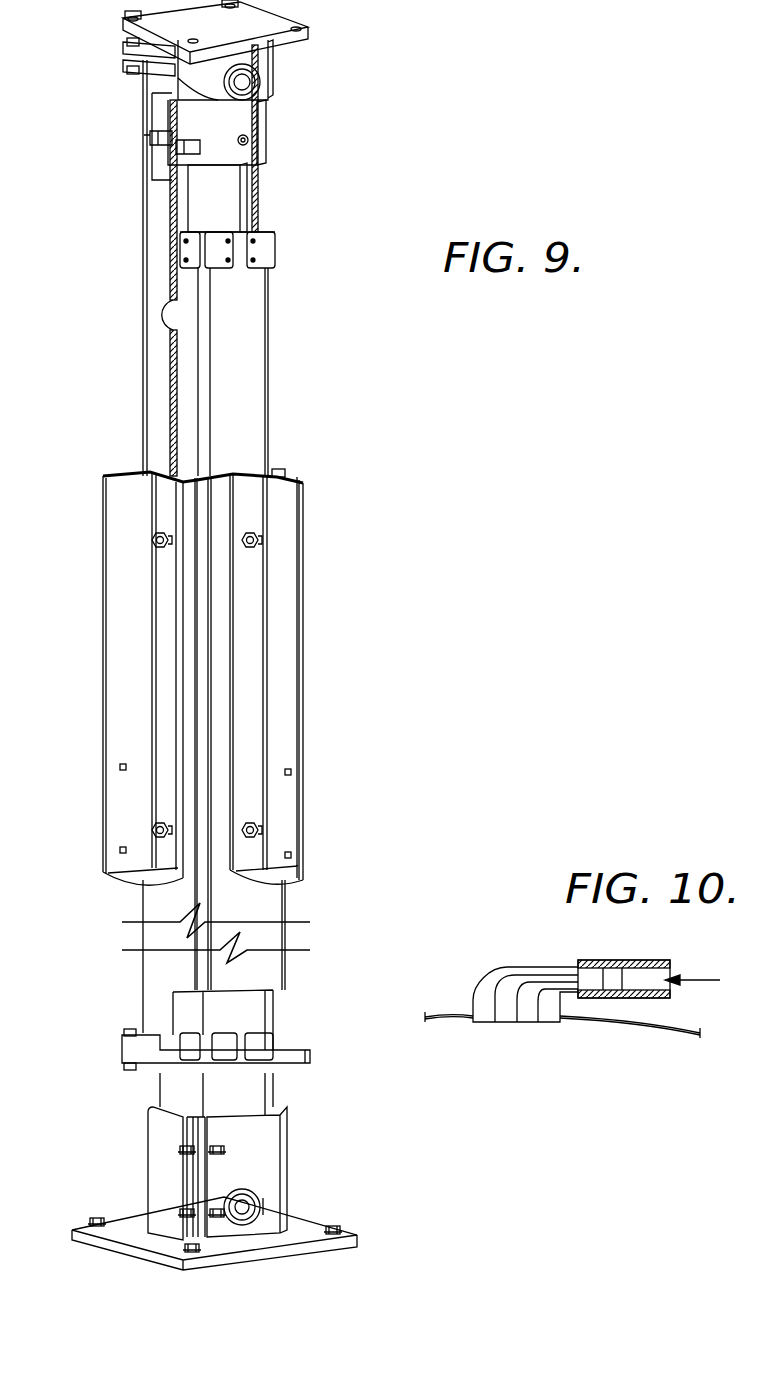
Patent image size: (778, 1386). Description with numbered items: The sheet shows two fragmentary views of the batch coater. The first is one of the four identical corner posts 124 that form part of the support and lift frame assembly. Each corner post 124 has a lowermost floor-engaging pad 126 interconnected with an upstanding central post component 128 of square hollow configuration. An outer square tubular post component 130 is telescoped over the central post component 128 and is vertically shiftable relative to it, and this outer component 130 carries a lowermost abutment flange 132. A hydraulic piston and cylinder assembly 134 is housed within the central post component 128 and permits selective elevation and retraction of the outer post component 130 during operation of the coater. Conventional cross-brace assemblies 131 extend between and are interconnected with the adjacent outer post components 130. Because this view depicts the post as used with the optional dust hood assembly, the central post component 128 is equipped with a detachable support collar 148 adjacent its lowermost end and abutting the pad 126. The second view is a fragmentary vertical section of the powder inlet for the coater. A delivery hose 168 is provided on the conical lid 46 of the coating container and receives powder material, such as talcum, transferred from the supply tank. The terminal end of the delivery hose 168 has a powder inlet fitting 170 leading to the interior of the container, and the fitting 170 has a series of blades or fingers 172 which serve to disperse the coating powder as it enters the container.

In FIG. 9, the corner post 124 is at (133, 248).
In FIG. 9, the floor-engaging pad 126 is at (303, 1224).
In FIG. 9, the central post component 128 is at (245, 380).
In FIG. 9, the outer square tubular post component 130 is at (160, 398).
In FIG. 9, the cross-brace assembly 131 is at (288, 612).
In FIG. 9, the abutment flange 132 is at (130, 1043).
In FIG. 9, the hydraulic piston and cylinder assembly 134 is at (256, 184).
In FIG. 9, the support collar 148 is at (245, 1165).
In FIG. 10, the delivery hose 168 is at (650, 962).
In FIG. 10, the powder inlet fitting 170 is at (497, 970).
In FIG. 10, the blades or fingers 172 is at (533, 1022).
In FIG. 10, the conical lid 46 is at (640, 1030).